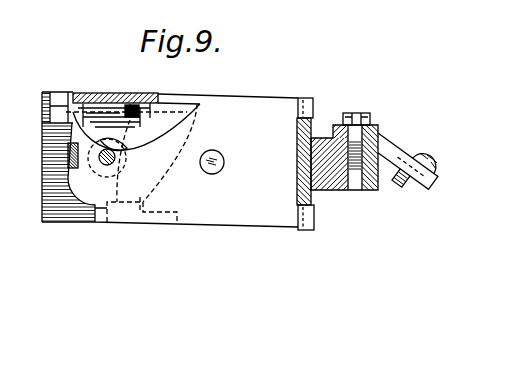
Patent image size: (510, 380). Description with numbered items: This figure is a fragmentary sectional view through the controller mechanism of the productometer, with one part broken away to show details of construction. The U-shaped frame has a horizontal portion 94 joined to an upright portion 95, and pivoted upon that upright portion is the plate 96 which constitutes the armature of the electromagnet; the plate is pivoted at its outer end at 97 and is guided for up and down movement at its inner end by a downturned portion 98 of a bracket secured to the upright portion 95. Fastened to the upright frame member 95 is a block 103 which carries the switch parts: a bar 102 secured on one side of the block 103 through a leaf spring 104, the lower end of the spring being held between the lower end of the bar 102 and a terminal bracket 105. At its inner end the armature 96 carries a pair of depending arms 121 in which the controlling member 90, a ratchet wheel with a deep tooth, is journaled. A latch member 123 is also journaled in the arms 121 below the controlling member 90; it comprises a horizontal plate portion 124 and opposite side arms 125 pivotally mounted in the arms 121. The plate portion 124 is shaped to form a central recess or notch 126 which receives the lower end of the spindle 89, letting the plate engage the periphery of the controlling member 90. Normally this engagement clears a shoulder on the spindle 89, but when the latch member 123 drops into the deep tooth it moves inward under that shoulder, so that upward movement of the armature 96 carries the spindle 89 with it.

The spindle 89 is at (95, 156).
The controlling member 90 is at (128, 104).
The horizontal portion of the frame 94 is at (75, 219).
The upright portion of the frame 95 is at (313, 136).
The armature plate 96 is at (213, 208).
The pivot of the armature plate 97 is at (303, 98).
The downturned portion of the bracket 98 is at (68, 158).
The bar 102 is at (378, 134).
The block 103 is at (333, 190).
The leaf spring 104 is at (370, 122).
The terminal bracket 105 is at (420, 183).
The depending arms 121 is at (90, 92).
The latch member 123 is at (200, 96).
The horizontal plate portion 124 is at (212, 97).
The side arms of the latch member 125 is at (168, 105).
The central recess or notch 126 is at (150, 103).